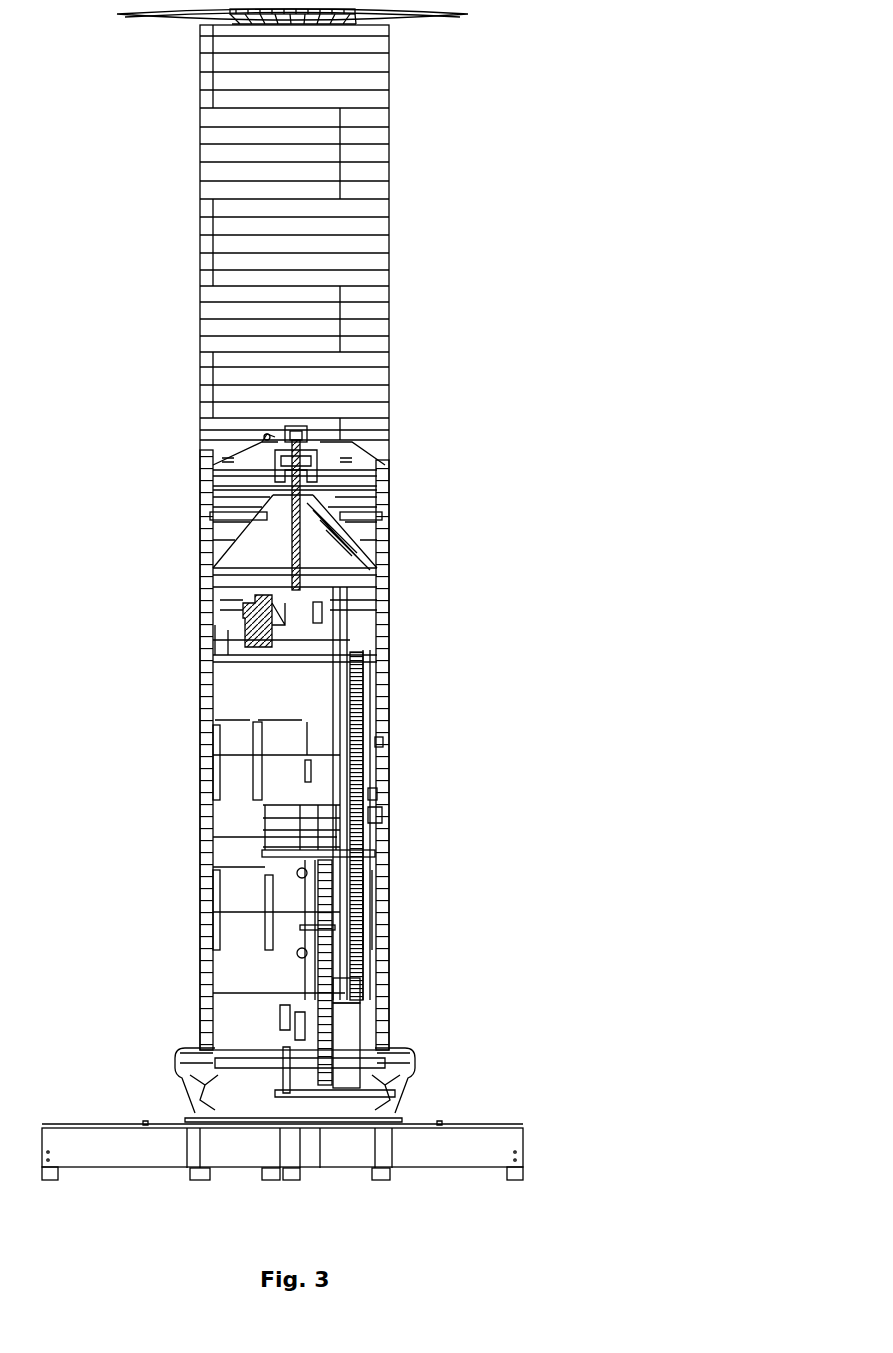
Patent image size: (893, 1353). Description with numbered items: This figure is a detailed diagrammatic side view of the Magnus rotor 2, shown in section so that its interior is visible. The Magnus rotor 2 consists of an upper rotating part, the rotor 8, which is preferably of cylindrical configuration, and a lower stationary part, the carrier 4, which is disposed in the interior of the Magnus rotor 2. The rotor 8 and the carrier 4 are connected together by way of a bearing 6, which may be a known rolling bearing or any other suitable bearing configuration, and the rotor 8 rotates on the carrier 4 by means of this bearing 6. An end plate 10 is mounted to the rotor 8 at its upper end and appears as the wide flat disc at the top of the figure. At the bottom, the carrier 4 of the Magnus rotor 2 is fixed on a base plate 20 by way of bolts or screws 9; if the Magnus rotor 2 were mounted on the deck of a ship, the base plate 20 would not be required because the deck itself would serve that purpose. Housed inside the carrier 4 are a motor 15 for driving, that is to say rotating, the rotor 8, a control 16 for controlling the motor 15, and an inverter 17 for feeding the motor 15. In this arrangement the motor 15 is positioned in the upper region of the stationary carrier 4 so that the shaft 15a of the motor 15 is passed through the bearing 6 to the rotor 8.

The Magnus rotor 2 is at (110, 239).
The end plate 10 is at (425, 22).
The rotor 8 is at (362, 212).
The bearing 6 is at (378, 462).
The shaft 15a is at (370, 541).
The motor 15 is at (240, 628).
The carrier 4 is at (243, 812).
The inverter 17 is at (350, 992).
The control 16 is at (343, 1033).
The bolts or screws 9 is at (195, 1108).
The base plate 20 is at (466, 1145).